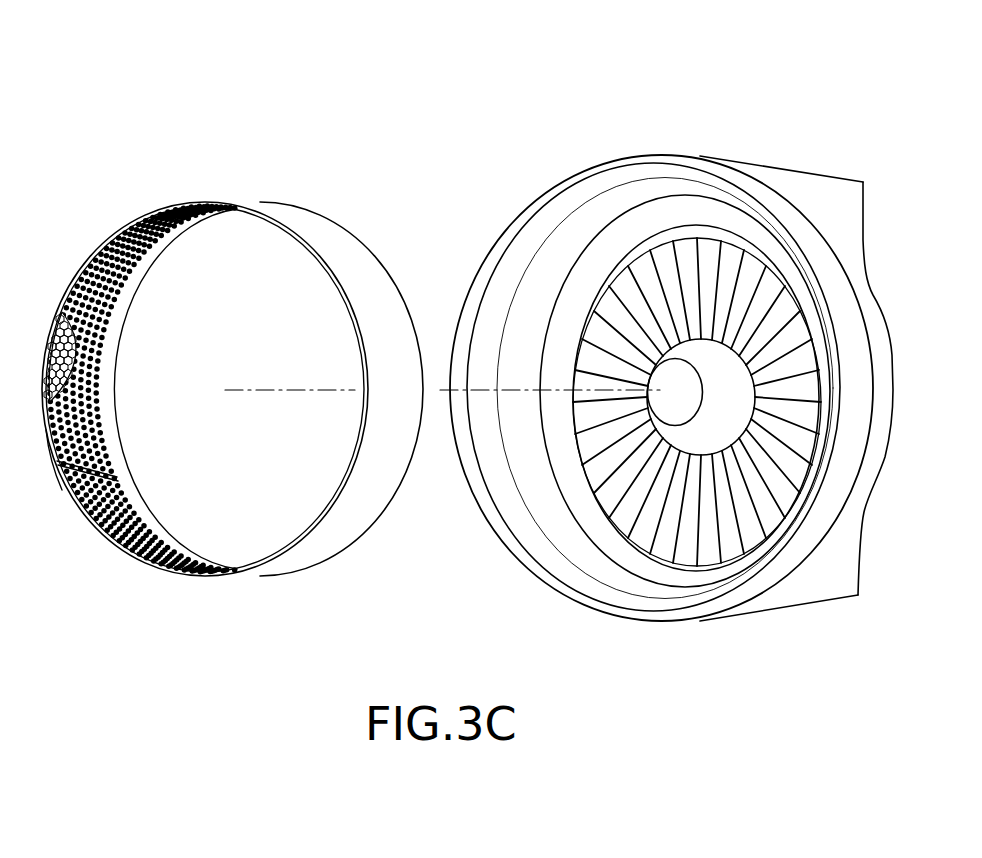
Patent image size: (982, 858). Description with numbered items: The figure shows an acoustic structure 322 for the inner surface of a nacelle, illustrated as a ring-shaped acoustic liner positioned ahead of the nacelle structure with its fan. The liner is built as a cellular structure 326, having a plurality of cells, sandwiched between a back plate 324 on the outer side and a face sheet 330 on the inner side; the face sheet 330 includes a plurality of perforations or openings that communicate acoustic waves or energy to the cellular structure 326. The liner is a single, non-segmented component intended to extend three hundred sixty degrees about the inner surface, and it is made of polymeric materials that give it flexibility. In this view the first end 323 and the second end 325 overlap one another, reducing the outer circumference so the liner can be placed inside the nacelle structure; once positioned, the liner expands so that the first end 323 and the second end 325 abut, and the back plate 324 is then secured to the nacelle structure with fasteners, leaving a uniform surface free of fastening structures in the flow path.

The acoustic structure 322 is at (132, 134).
The first end 323 is at (115, 480).
The back plate 324 is at (355, 256).
The second end 325 is at (50, 460).
The cellular structure 326 is at (73, 363).
The face sheet 330 is at (75, 423).